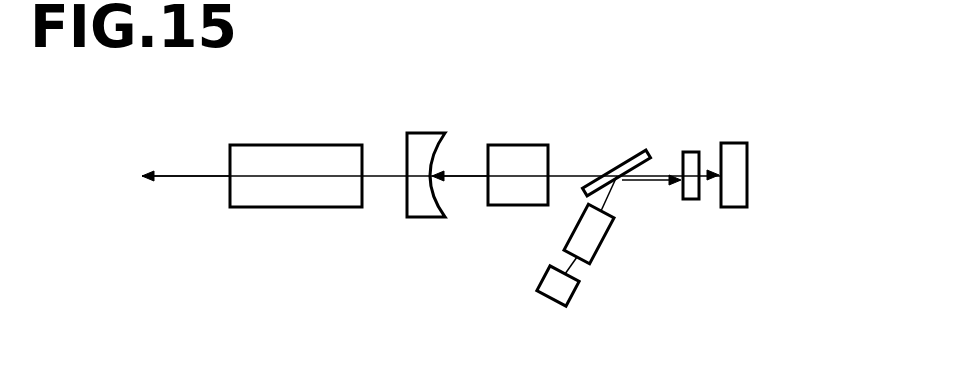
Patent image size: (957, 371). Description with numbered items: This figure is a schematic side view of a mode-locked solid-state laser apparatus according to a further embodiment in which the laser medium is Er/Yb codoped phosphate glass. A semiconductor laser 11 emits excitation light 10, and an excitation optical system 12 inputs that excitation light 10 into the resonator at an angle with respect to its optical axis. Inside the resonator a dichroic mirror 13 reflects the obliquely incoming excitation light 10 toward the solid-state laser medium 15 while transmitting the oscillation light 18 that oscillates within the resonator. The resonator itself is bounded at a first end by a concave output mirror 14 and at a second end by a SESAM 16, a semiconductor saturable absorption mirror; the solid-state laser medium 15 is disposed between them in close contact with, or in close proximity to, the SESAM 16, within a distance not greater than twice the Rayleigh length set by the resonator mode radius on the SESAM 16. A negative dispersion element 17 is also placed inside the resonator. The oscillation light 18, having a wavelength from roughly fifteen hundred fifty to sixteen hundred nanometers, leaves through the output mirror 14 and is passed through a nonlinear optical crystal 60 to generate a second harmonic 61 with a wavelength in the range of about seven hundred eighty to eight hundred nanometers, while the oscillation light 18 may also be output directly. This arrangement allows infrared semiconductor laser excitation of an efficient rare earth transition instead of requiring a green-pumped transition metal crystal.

The excitation light 10 is at (647, 182).
The semiconductor laser 11 is at (537, 280).
The excitation optical system 12 is at (563, 240).
The dichroic mirror 13 is at (620, 162).
The concave output mirror 14 is at (427, 132).
The solid-state laser medium 15 is at (690, 150).
The SESAM 16 is at (732, 142).
The negative dispersion element 17 is at (508, 144).
The oscillation light 18 is at (458, 177).
The nonlinear optical crystal 60 is at (296, 144).
The second harmonic 61 is at (200, 176).